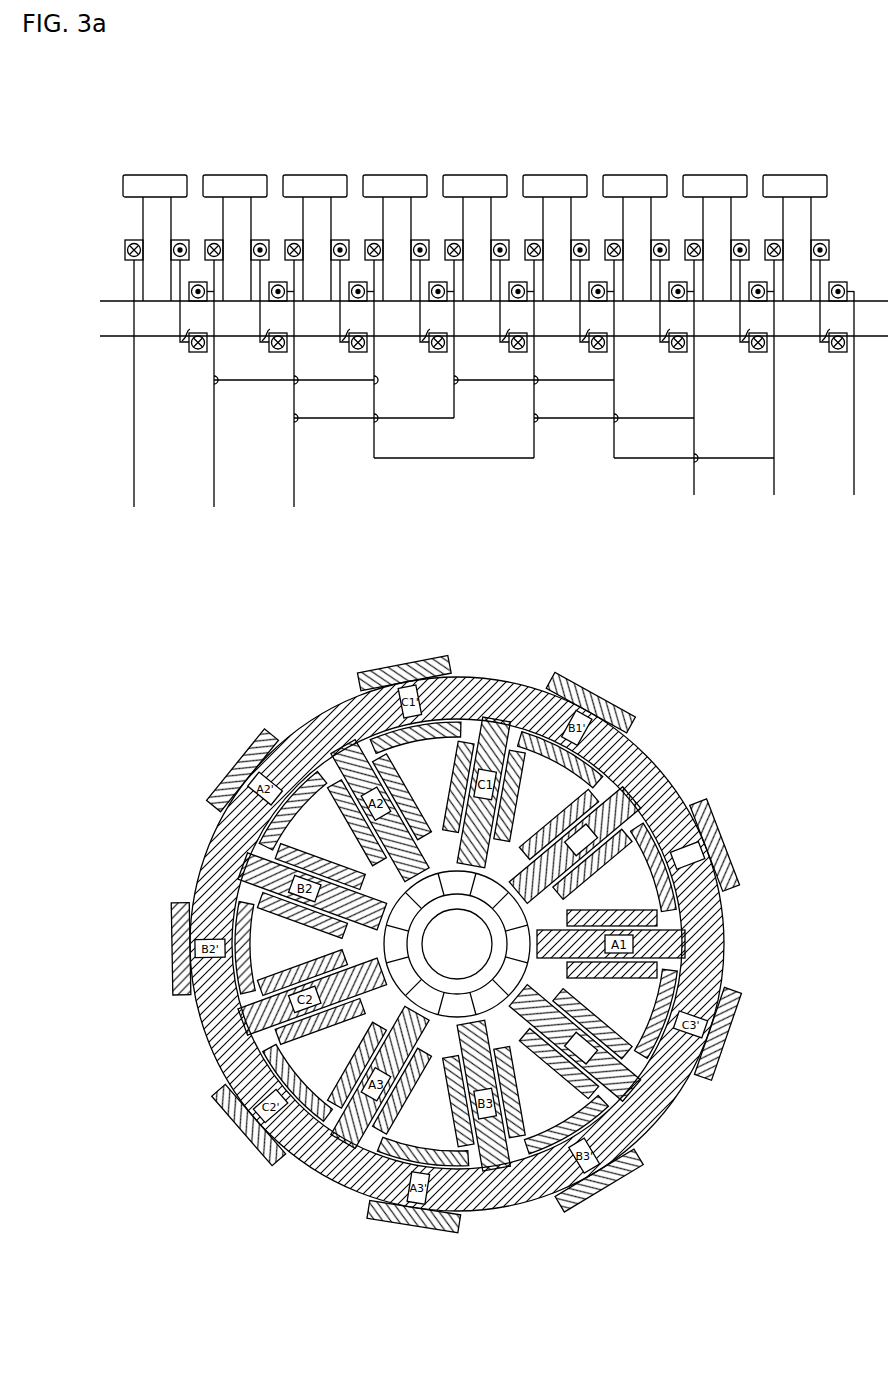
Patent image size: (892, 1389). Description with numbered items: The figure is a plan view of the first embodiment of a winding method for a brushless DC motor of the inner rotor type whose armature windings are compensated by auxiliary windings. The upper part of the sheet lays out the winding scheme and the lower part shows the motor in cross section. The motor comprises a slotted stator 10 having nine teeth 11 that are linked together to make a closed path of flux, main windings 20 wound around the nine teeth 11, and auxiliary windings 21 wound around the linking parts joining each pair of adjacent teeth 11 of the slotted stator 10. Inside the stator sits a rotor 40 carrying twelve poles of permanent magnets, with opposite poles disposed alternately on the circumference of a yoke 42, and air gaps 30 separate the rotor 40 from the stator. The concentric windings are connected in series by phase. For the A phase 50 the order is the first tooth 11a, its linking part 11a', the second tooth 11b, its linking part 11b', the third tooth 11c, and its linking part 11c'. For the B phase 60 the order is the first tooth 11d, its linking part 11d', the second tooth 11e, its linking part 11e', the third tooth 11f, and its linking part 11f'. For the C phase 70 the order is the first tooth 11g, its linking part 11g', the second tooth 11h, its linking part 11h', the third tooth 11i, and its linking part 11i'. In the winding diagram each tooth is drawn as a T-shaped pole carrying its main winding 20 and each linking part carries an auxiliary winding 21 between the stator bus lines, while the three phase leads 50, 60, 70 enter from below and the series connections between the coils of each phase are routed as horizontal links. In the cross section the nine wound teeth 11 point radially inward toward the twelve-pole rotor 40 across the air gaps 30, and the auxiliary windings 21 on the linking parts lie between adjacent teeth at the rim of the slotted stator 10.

The slotted stator 10 is at (710, 920).
The teeth 11 is at (658, 762).
The A1 tooth 11a is at (156, 236).
The A2 tooth 11b is at (396, 236).
The A3 tooth 11c is at (636, 236).
The B1 tooth 11d is at (236, 236).
The B2 tooth 11e is at (476, 236).
The B3 tooth 11f is at (716, 236).
The C1 tooth 11g is at (316, 236).
The C2 tooth 11h is at (556, 236).
The C3 tooth 11i is at (796, 236).
The A1' linking part 11a' is at (188, 333).
The A2' linking part 11b' is at (428, 333).
The A3' linking part 11c' is at (668, 333).
The B1' linking part 11d' is at (268, 333).
The B2' linking part 11e' is at (508, 333).
The B3' linking part 11f' is at (749, 333).
The C1' linking part 11g' is at (348, 333).
The C2' linking part 11h' is at (588, 333).
The C3' linking part 11i' is at (829, 333).
The main windings 20 is at (677, 800).
The auxiliary windings 21 is at (718, 853).
The air gaps 30 is at (560, 993).
The rotor 40 is at (515, 1012).
The yoke 42 is at (483, 966).
The A phase 50 is at (134, 508).
The B phase 60 is at (214, 508).
The C phase 70 is at (294, 508).